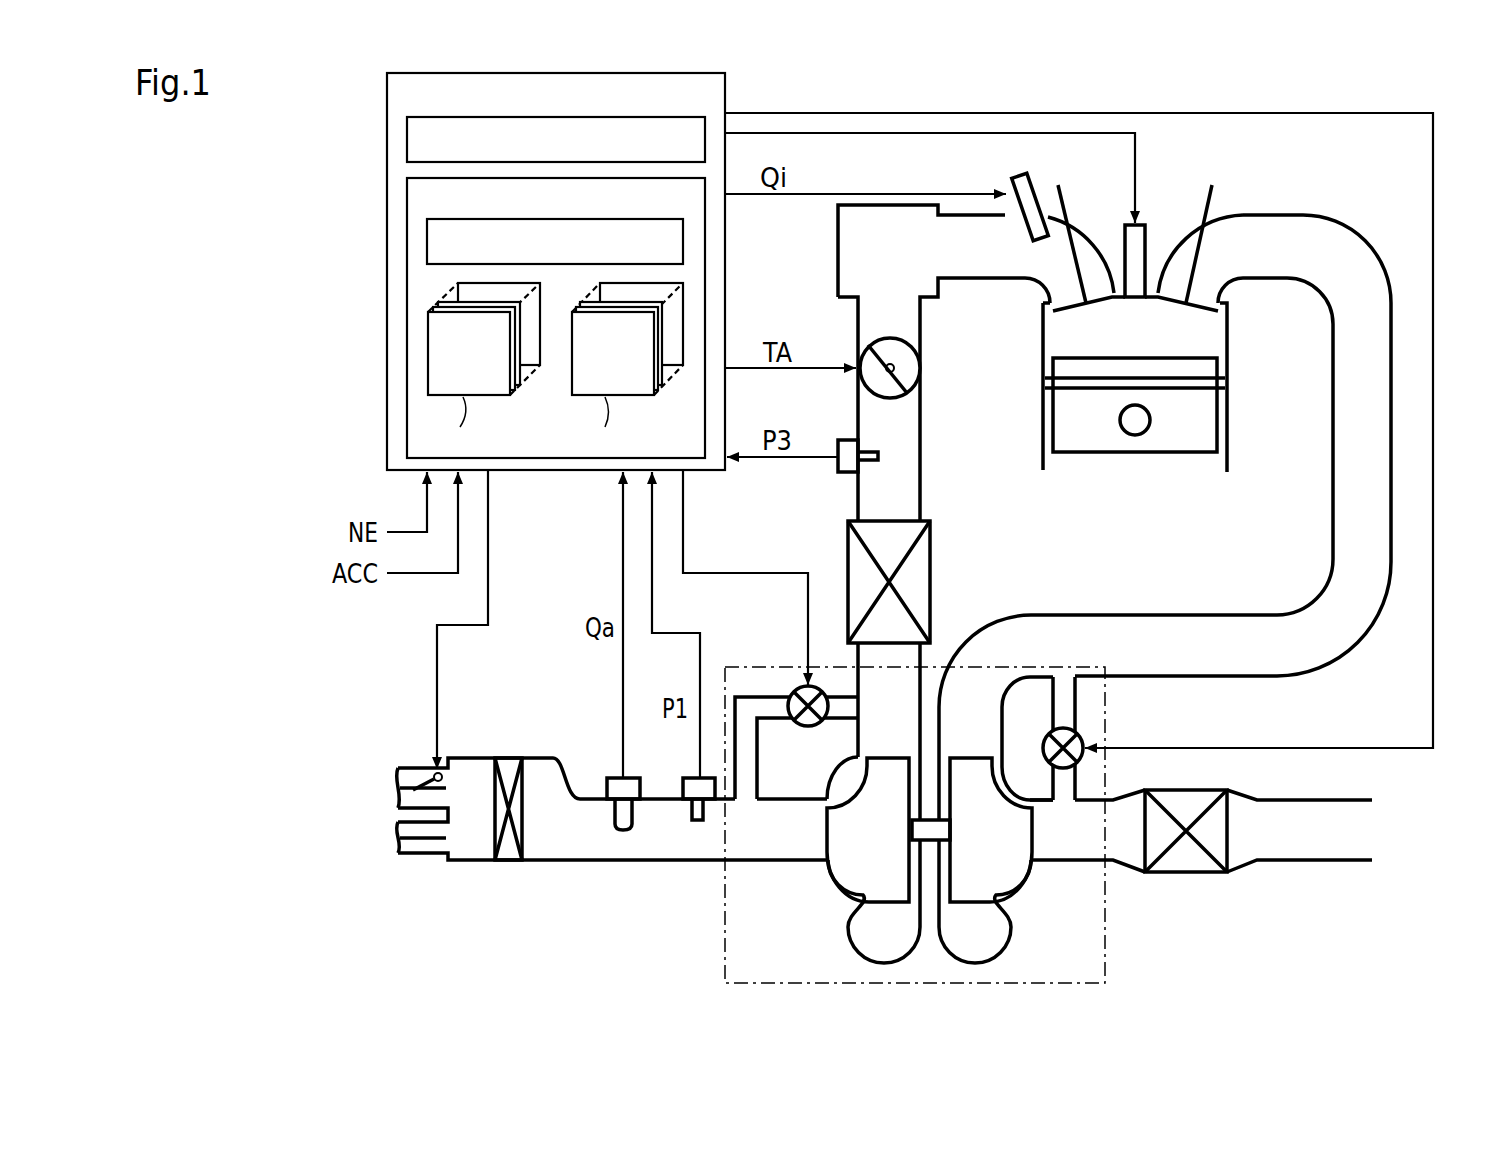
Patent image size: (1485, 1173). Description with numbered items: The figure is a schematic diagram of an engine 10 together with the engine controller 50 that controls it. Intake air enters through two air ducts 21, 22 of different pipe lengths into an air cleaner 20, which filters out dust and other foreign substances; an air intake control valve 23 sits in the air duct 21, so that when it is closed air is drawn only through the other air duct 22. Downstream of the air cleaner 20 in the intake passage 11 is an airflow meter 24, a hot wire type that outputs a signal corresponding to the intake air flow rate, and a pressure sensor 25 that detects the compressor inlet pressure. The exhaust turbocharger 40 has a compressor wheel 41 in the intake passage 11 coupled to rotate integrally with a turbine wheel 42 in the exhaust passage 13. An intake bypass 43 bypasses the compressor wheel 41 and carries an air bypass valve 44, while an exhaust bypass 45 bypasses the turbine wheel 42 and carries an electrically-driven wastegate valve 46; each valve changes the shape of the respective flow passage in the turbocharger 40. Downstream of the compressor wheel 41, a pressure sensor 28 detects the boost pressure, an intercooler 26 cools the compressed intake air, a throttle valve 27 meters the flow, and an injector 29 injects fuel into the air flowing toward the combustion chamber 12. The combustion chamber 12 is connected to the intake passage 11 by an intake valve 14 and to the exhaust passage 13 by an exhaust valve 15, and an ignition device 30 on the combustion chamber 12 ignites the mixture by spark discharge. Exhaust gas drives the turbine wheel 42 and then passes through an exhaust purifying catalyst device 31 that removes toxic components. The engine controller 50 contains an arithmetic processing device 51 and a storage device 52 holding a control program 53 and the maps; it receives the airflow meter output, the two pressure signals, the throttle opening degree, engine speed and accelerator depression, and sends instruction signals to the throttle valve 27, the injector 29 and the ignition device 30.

The engine 10 is at (593, 925).
The intake passage 11 is at (657, 865).
The combustion chamber 12 is at (1155, 349).
The exhaust passage 13 is at (1124, 625).
The intake valve 14 is at (1070, 250).
The exhaust valve 15 is at (1203, 245).
The air cleaner 20 is at (487, 757).
The air duct 21 is at (408, 768).
The air duct 22 is at (408, 857).
The air intake control valve 23 is at (433, 787).
The airflow meter 24 is at (603, 788).
The pressure sensor 25 is at (678, 788).
The intercooler 26 is at (932, 560).
The throttle valve 27 is at (912, 367).
The pressure sensor 28 is at (843, 475).
The injector 29 is at (1035, 178).
The ignition device 30 is at (1147, 235).
The exhaust purifying catalyst device 31 is at (1187, 862).
The exhaust turbocharger 40 is at (1105, 938).
The compressor wheel 41 is at (892, 767).
The turbine wheel 42 is at (972, 767).
The intake bypass 43 is at (750, 760).
The air bypass valve 44 is at (813, 727).
The exhaust bypass 45 is at (1067, 713).
The wastegate valve 46 is at (1042, 745).
The engine controller 50 is at (387, 95).
The arithmetic processing device 51 is at (407, 137).
The storage device 52 is at (407, 197).
The control program 53 is at (693, 242).